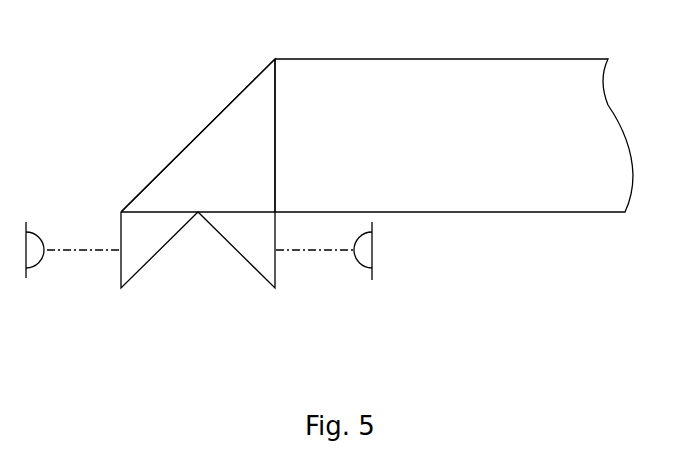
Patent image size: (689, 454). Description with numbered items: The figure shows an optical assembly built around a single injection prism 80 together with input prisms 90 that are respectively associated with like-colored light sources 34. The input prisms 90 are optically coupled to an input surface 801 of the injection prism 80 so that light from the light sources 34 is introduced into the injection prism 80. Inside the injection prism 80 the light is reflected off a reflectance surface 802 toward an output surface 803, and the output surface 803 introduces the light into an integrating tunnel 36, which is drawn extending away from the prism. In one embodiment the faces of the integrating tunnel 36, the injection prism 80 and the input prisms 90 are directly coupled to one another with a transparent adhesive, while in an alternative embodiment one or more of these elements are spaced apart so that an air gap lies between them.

The integrating tunnel 36 is at (450, 56).
The injection prism 80 is at (207, 152).
The input surface 801 is at (243, 210).
The reflectance surface 802 is at (243, 85).
The output surface 803 is at (278, 125).
The input prisms 90 is at (153, 260).
The light sources 34 is at (28, 280).